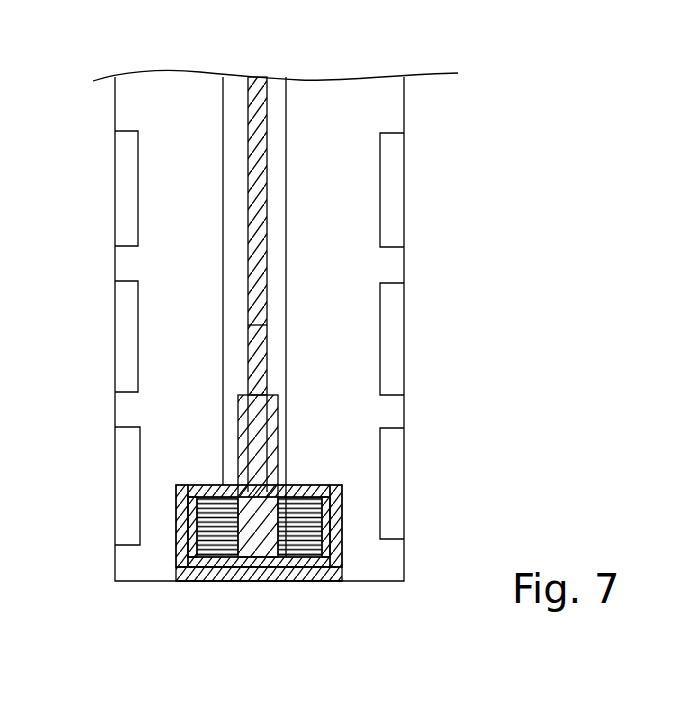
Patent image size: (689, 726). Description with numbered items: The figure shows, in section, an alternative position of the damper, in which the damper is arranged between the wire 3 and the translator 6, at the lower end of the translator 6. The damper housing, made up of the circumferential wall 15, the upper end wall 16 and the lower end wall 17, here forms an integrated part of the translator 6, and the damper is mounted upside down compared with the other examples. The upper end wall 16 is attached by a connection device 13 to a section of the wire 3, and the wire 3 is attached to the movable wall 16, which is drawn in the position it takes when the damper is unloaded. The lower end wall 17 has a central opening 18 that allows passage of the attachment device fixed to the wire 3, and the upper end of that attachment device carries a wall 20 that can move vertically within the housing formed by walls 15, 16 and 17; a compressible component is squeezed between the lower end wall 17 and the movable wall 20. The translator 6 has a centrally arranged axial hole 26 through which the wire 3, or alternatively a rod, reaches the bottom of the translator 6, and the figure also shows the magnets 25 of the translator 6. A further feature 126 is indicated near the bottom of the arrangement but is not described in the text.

The wire 3 is at (253, 98).
The translator 6 is at (465, 236).
The connection device 13 is at (280, 422).
The circumferential wall 15 is at (338, 540).
The upper end wall 16 is at (196, 575).
The lower end wall 17 is at (203, 497).
The central opening 18 is at (300, 466).
The movable wall 20 is at (293, 583).
The magnets 25 is at (398, 318).
The axial hole 26 is at (286, 130).
The end face 126 is at (218, 600).